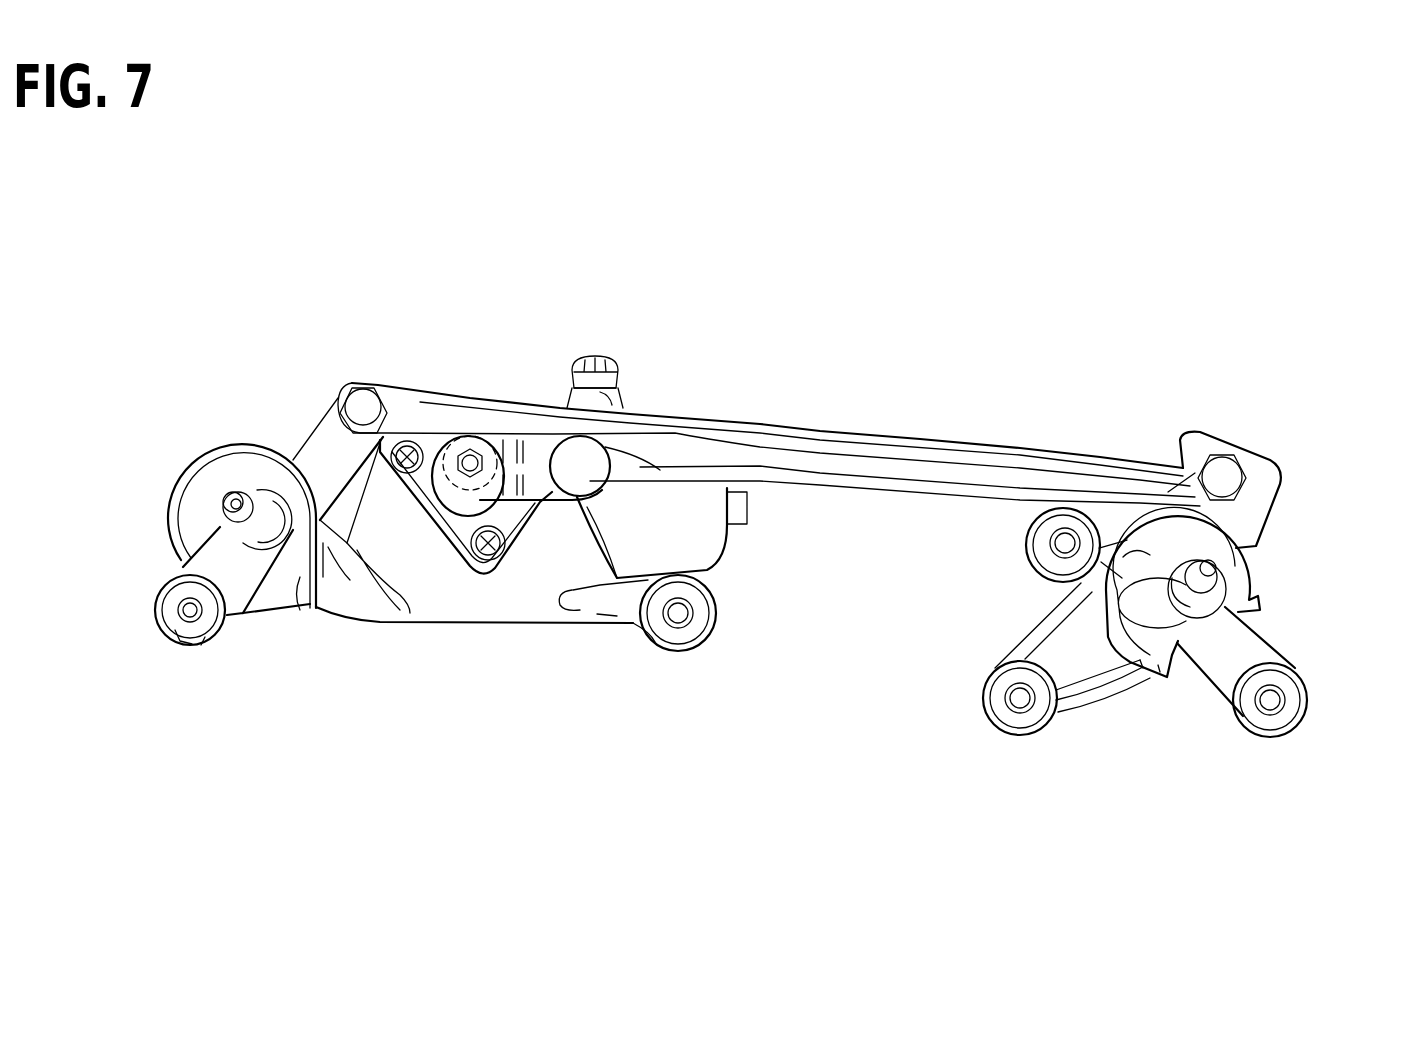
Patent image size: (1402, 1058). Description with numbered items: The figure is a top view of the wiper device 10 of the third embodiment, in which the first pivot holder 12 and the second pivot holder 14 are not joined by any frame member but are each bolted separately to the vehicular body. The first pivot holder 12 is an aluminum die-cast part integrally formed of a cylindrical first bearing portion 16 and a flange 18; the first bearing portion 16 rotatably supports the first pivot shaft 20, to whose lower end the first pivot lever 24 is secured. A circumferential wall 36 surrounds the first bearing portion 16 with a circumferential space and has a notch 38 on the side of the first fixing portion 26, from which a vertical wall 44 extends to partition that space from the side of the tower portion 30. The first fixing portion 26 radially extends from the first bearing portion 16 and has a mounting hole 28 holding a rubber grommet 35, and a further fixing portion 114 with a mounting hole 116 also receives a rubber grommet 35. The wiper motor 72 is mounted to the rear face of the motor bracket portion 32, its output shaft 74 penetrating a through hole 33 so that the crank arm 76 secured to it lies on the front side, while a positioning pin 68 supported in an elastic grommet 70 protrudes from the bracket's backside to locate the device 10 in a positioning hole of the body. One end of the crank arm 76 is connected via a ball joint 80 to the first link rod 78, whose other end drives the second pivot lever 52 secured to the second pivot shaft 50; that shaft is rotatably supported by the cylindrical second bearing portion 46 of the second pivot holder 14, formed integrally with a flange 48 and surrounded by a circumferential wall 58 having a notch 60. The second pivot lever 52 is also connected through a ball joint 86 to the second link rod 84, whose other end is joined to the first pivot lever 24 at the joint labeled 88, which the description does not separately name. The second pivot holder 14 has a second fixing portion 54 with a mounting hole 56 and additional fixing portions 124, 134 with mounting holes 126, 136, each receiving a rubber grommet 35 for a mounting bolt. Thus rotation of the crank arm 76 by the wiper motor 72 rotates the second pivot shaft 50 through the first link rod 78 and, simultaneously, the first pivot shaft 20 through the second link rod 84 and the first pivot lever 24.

The wiper device 10 is at (797, 352).
The first pivot holder 12 is at (182, 463).
The second pivot holder 14 is at (1257, 573).
The first bearing portion 16 is at (255, 580).
The flange 18 is at (225, 478).
The first pivot shaft 20 is at (238, 500).
The first pivot lever 24 is at (332, 432).
The first fixing portion 26 is at (158, 618).
The mounting hole 28 is at (177, 625).
The tower portion 30 is at (360, 600).
The motor bracket portion 32 is at (475, 595).
The through hole 33 is at (465, 507).
The rubber grommet 35 is at (205, 617).
The circumferential wall 36 is at (172, 512).
The notch 38 is at (300, 590).
The vertical wall 44 is at (328, 578).
The second bearing portion 46 is at (1085, 737).
The flange 48 is at (1055, 580).
The second pivot shaft 50 is at (1235, 575).
The second pivot lever 52 is at (1252, 455).
The second fixing portion 54 is at (1240, 745).
The mounting hole 56 is at (1305, 695).
The circumferential wall 58 is at (1140, 680).
The notch 60 is at (1247, 606).
The positioning pin 68 is at (591, 355).
The elastic grommet 70 is at (615, 358).
The wiper motor 72 is at (690, 500).
The output shaft 74 is at (469, 458).
The crank arm 76 is at (545, 485).
The first link rod 78 is at (835, 492).
The ball joint 80 is at (578, 455).
The second link rod 84 is at (868, 440).
The ball joint 86 is at (1220, 468).
The fastening bolt 88 is at (362, 400).
The fixing portion 114 is at (662, 645).
The mounting hole 116 is at (718, 600).
The fixing portion 124 is at (1015, 740).
The mounting hole 126 is at (985, 690).
The fixing portion 134 is at (1050, 585).
The mounting hole 136 is at (1035, 520).